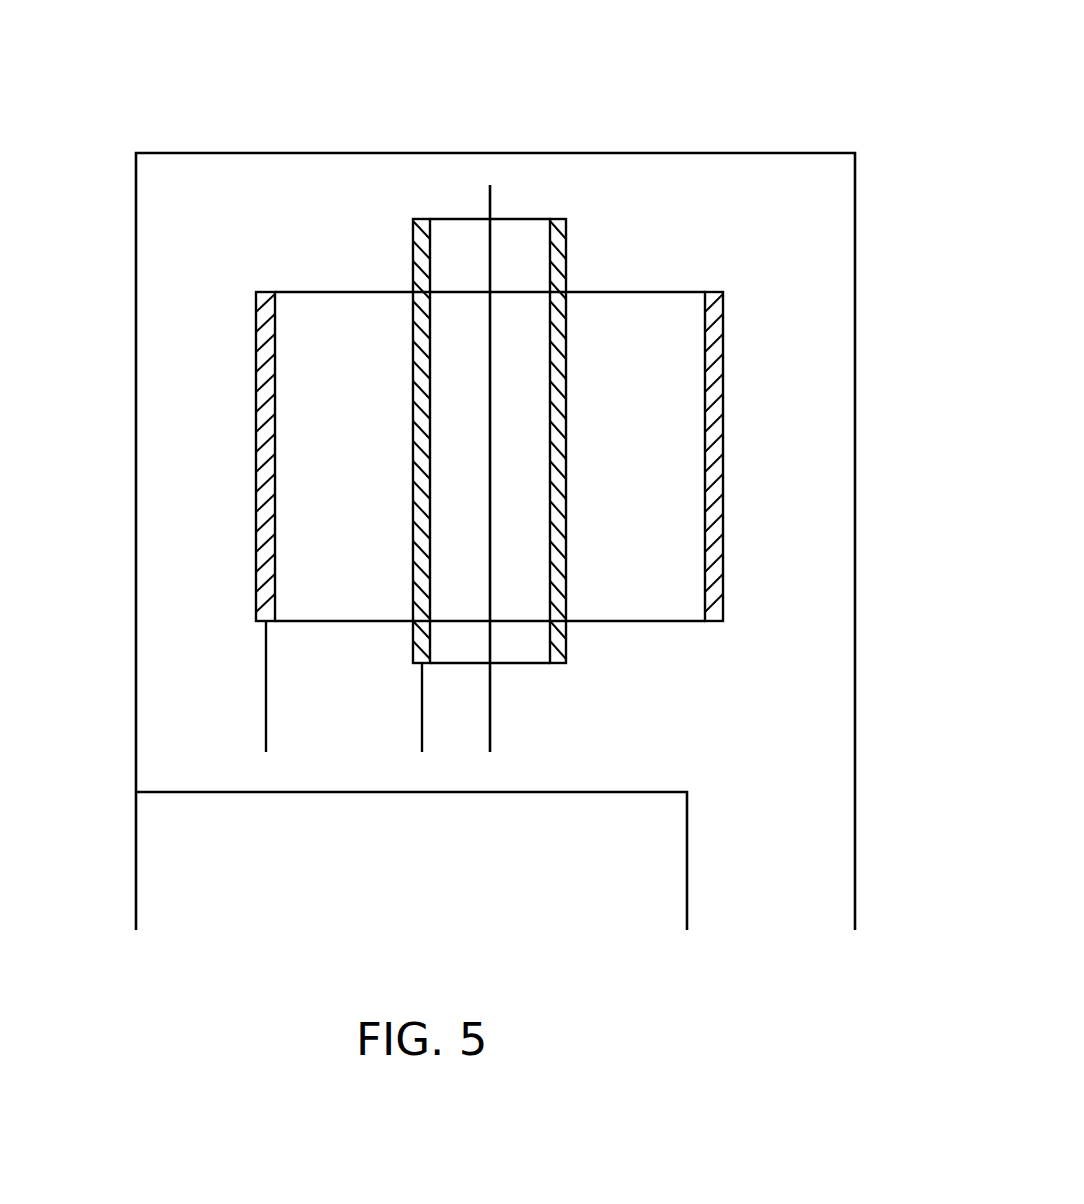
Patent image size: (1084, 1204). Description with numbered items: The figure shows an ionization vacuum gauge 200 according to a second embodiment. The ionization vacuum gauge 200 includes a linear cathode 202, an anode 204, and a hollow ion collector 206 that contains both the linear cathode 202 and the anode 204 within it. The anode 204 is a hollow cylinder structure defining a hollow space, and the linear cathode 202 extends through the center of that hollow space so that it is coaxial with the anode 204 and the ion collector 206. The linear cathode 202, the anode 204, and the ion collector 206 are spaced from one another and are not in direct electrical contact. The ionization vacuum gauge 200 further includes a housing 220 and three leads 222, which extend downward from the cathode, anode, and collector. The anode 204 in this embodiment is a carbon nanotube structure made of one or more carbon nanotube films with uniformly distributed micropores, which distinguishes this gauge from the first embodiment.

The ionization vacuum gauge 200 is at (499, 468).
The linear cathode 202 is at (491, 202).
The anode 204 is at (563, 337).
The ion collector 206 is at (256, 440).
The housing 220 is at (856, 490).
The leads 222 is at (490, 735).